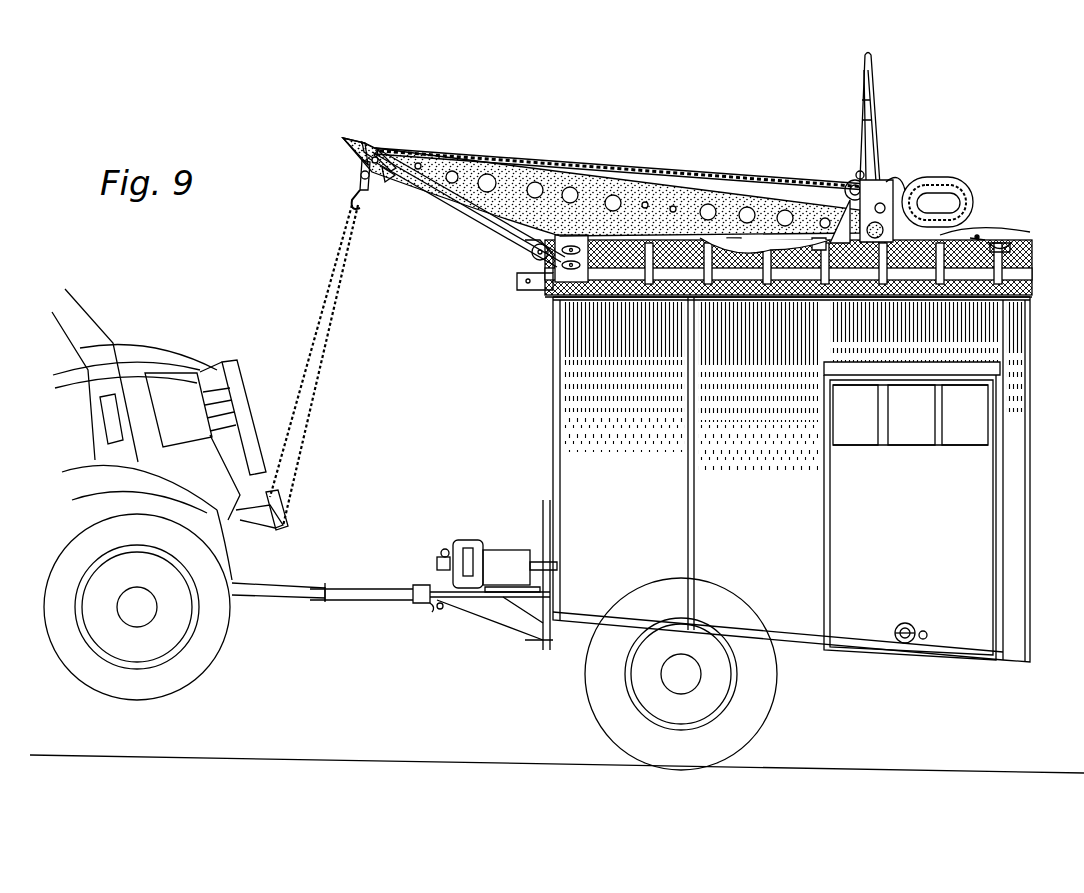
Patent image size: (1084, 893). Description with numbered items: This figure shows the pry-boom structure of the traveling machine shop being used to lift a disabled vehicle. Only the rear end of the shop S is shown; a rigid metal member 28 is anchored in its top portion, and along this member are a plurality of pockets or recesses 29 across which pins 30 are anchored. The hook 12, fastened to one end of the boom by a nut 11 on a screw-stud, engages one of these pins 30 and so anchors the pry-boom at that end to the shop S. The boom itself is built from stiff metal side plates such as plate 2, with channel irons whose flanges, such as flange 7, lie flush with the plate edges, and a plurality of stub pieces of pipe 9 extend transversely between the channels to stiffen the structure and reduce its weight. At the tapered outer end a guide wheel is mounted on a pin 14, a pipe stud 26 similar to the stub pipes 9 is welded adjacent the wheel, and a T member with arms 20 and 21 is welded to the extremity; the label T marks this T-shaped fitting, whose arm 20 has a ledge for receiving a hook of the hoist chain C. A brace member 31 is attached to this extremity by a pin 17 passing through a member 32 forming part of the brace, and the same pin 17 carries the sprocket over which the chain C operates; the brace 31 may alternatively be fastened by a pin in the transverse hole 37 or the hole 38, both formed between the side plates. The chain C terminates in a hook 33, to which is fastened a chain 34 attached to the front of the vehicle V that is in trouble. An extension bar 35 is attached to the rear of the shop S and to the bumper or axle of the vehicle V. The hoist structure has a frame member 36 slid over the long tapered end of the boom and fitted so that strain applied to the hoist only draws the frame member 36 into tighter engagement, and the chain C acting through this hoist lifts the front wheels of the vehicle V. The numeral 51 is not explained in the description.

The side plate 2 is at (500, 222).
The flange 7 is at (346, 159).
The stub pieces of pipe 9 is at (487, 176).
The nut 11 is at (975, 238).
The hook 12 is at (998, 246).
The pin 14 is at (870, 183).
The pin 17 is at (376, 152).
The arm of T member 20 is at (362, 176).
The arm of T member 21 is at (345, 148).
The pipe stud 26 is at (420, 164).
The rigid metal member 28 is at (1010, 248).
The pockets or recesses 29 is at (735, 236).
The pins 30 is at (745, 237).
The brace member 31 is at (380, 192).
The member of brace 32 is at (388, 157).
The hook 33 is at (355, 196).
The chain 34 is at (314, 402).
The extension bar 35 is at (368, 596).
The frame member 36 is at (905, 198).
The transverse hole 37 is at (675, 206).
The hole 38 is at (645, 202).
The eye 51 is at (352, 184).
The hoist chain or pull member C is at (636, 150).
The shop S is at (978, 500).
The vehicle V is at (240, 543).
The tip T is at (372, 126).